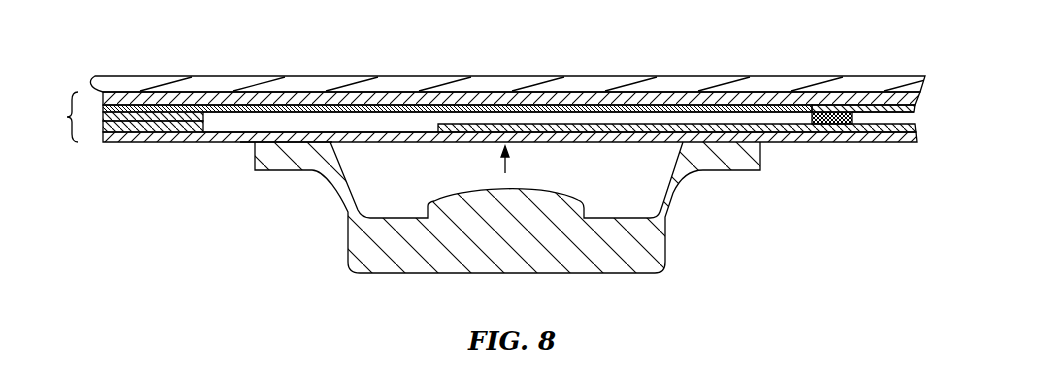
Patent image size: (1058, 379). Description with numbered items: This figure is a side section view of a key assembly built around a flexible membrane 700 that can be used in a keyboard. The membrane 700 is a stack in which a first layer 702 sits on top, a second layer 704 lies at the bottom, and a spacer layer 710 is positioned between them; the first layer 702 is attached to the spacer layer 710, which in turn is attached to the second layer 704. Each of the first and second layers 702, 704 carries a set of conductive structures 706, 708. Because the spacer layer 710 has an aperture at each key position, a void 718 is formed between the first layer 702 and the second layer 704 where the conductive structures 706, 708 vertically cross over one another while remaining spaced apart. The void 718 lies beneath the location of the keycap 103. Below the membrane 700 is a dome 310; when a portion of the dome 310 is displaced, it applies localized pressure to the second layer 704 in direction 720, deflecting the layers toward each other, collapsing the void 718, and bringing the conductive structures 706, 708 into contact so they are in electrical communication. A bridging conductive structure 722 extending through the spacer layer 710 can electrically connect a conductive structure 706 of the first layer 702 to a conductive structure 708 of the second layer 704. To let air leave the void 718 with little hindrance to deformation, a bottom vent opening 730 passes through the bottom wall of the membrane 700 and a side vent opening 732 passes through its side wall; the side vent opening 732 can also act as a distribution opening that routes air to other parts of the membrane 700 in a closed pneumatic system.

The keycap 103 is at (538, 85).
The first layer 702 is at (158, 100).
The conductive structure 706 is at (332, 105).
The spacer layer 710 is at (138, 130).
The side vent opening 732 is at (157, 130).
The void 718 is at (362, 121).
The conductive structure 708 is at (800, 130).
The bridging conductive structure 722 is at (842, 120).
The second layer 704 is at (215, 140).
The bottom vent opening 730 is at (245, 142).
The flexible membrane 700 is at (60, 117).
The dome 310 is at (655, 247).
The direction 720 is at (506, 165).